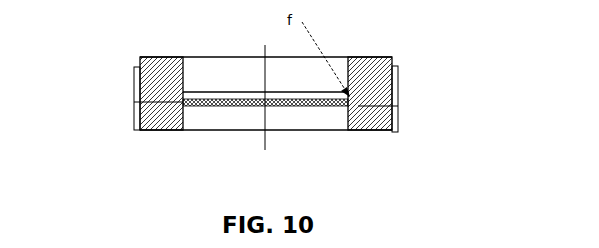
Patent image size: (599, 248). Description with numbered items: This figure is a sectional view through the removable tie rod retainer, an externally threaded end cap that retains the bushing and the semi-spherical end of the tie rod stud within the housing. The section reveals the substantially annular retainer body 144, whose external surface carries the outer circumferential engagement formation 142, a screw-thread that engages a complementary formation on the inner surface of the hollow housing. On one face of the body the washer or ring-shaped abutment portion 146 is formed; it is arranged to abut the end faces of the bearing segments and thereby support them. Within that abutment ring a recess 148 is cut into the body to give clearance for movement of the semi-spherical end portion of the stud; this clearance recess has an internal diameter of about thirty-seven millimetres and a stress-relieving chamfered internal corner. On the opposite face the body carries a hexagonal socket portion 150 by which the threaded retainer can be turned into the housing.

The outer circumferential engagement formation 142 is at (398, 98).
The retainer body 144 is at (157, 67).
The ring-shaped abutment portion 146 is at (363, 57).
The recess 148 is at (235, 82).
The hexagonal socket portion 150 is at (218, 120).